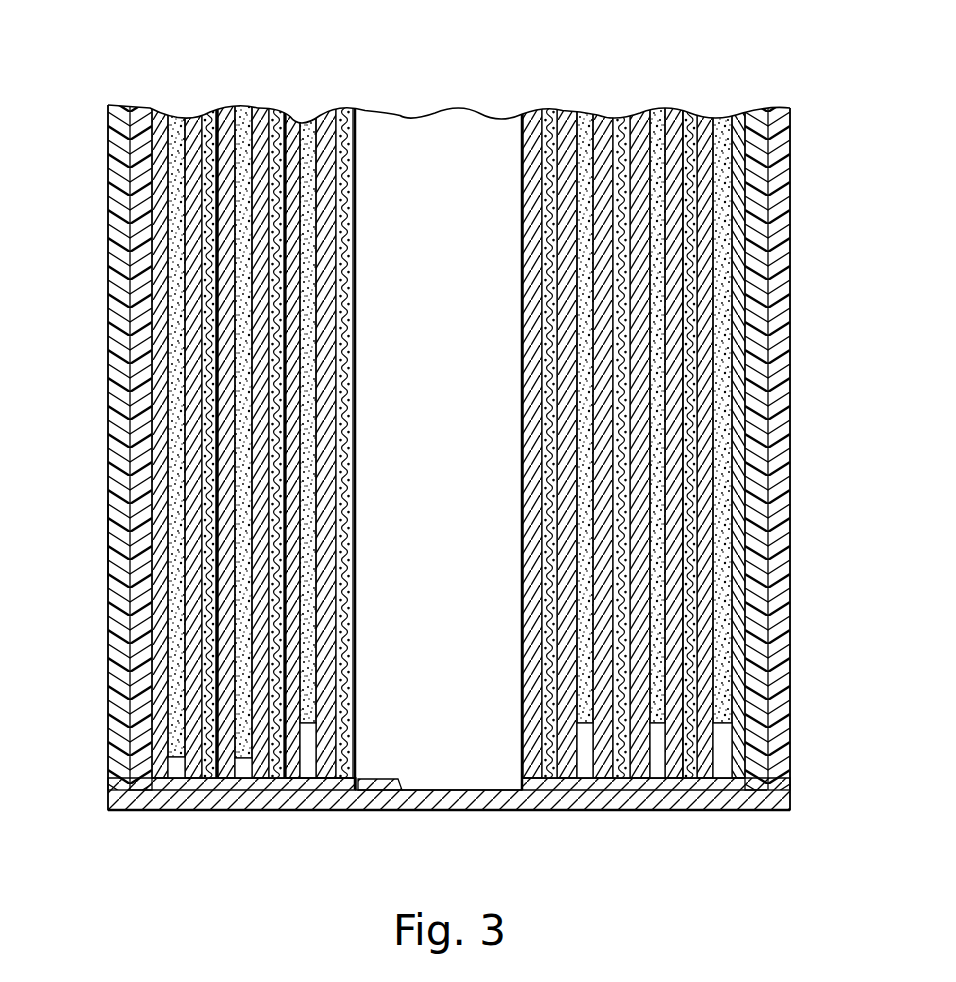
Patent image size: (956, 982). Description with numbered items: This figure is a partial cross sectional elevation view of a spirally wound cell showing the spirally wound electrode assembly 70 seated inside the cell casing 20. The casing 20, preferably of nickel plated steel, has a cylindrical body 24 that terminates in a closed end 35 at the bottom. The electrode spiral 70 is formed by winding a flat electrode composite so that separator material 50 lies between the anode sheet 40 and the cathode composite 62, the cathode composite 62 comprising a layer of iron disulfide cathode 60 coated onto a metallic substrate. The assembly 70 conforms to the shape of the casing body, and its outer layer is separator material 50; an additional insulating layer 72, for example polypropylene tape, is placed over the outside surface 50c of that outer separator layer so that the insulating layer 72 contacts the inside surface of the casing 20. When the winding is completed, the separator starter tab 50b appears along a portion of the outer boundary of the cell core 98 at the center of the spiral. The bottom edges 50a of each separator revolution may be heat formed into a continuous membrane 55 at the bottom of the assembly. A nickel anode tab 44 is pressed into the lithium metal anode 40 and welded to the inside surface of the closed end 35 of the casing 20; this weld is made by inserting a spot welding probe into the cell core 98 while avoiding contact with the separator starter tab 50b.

The cell casing 20 is at (108, 240).
The cylindrical body 24 is at (108, 540).
The closed end 35 is at (636, 802).
The anode 40 is at (168, 115).
The anode tab 44 is at (375, 790).
The separator 50 is at (152, 106).
The bottom edges of separator 50a is at (218, 786).
The separator starter tab 50b is at (532, 108).
The outside surface of outer separator layer 50c is at (750, 510).
The continuous membrane 55 is at (320, 786).
The cathode 60 is at (210, 113).
The cathode composite 62 is at (198, 645).
The spirally wound electrode assembly 70 is at (142, 712).
The insulating layer 72 is at (132, 325).
The cell core 98 is at (455, 418).